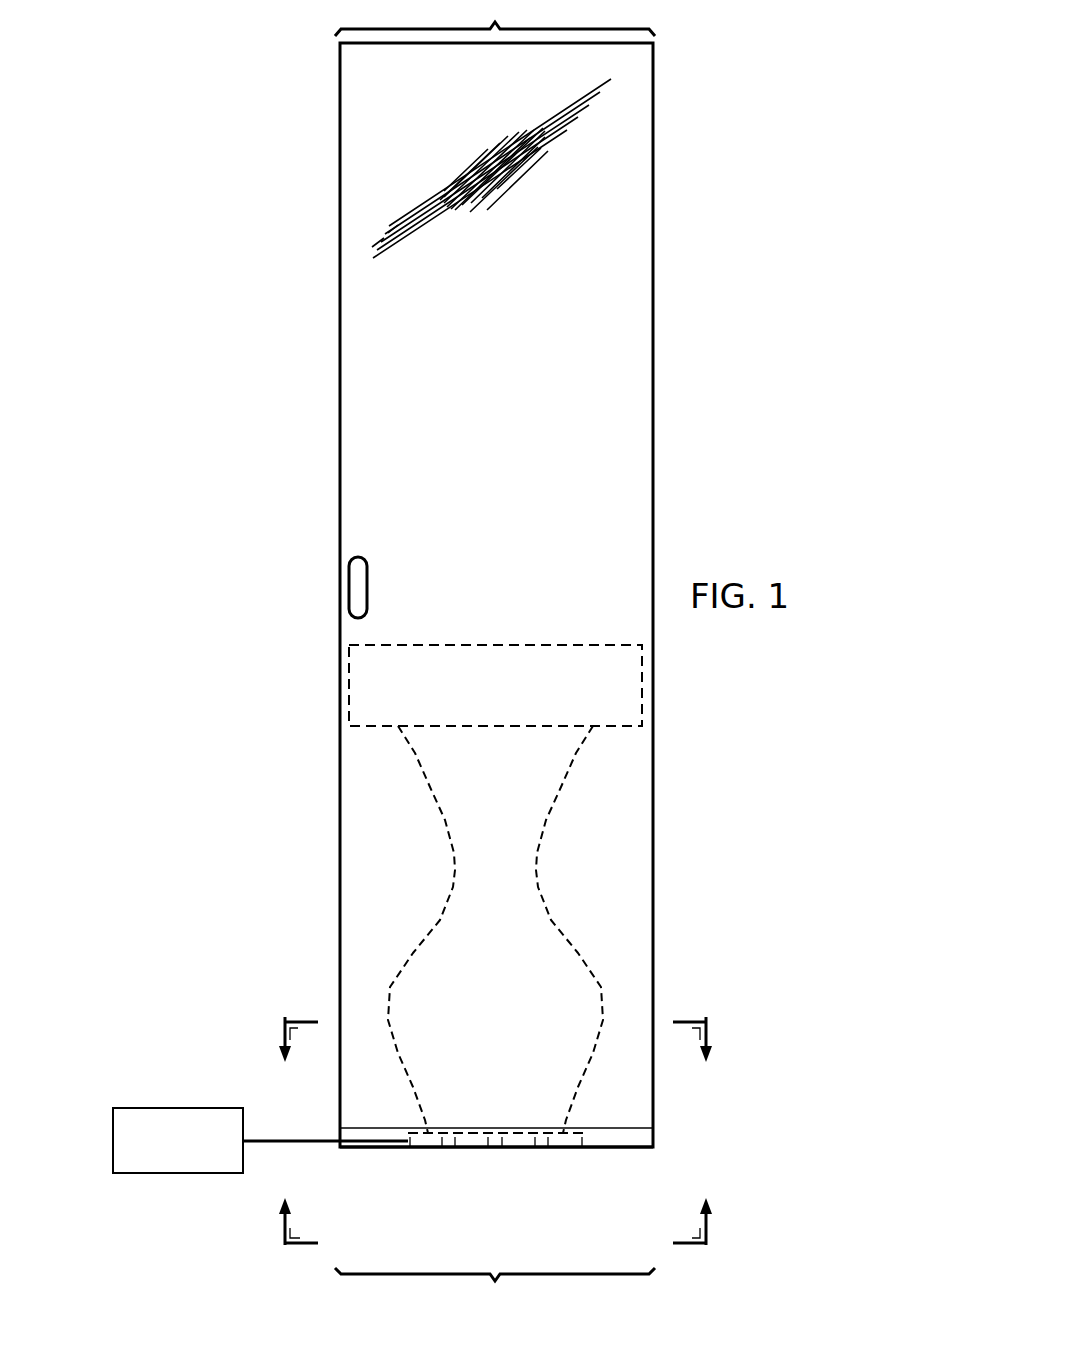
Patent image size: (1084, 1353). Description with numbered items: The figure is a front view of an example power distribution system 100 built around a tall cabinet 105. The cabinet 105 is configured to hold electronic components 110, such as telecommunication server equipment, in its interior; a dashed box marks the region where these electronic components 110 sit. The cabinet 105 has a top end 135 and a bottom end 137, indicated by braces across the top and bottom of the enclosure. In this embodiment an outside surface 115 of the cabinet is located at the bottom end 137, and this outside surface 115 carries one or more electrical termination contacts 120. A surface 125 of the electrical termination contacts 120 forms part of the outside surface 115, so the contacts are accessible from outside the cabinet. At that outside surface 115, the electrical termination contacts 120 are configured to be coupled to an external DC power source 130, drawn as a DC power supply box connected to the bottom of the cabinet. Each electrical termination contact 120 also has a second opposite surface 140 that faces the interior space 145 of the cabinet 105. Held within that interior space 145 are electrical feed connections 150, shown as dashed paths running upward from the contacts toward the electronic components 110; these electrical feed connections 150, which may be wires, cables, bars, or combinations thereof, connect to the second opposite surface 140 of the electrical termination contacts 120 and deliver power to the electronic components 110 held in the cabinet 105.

The power distribution system 100 is at (230, 366).
The cabinet 105 is at (661, 206).
The electronic components 110 is at (349, 688).
The outside surface 115 is at (622, 1150).
The electrical termination contacts 120 is at (420, 1150).
The surface 125 is at (470, 1150).
The external DC power source 130 is at (178, 1173).
The top end 135 is at (495, 18).
The bottom end 137 is at (495, 1289).
The second opposite surface 140 is at (518, 1133).
The interior space 145 is at (622, 1115).
The electrical feed connections 150 is at (392, 981).